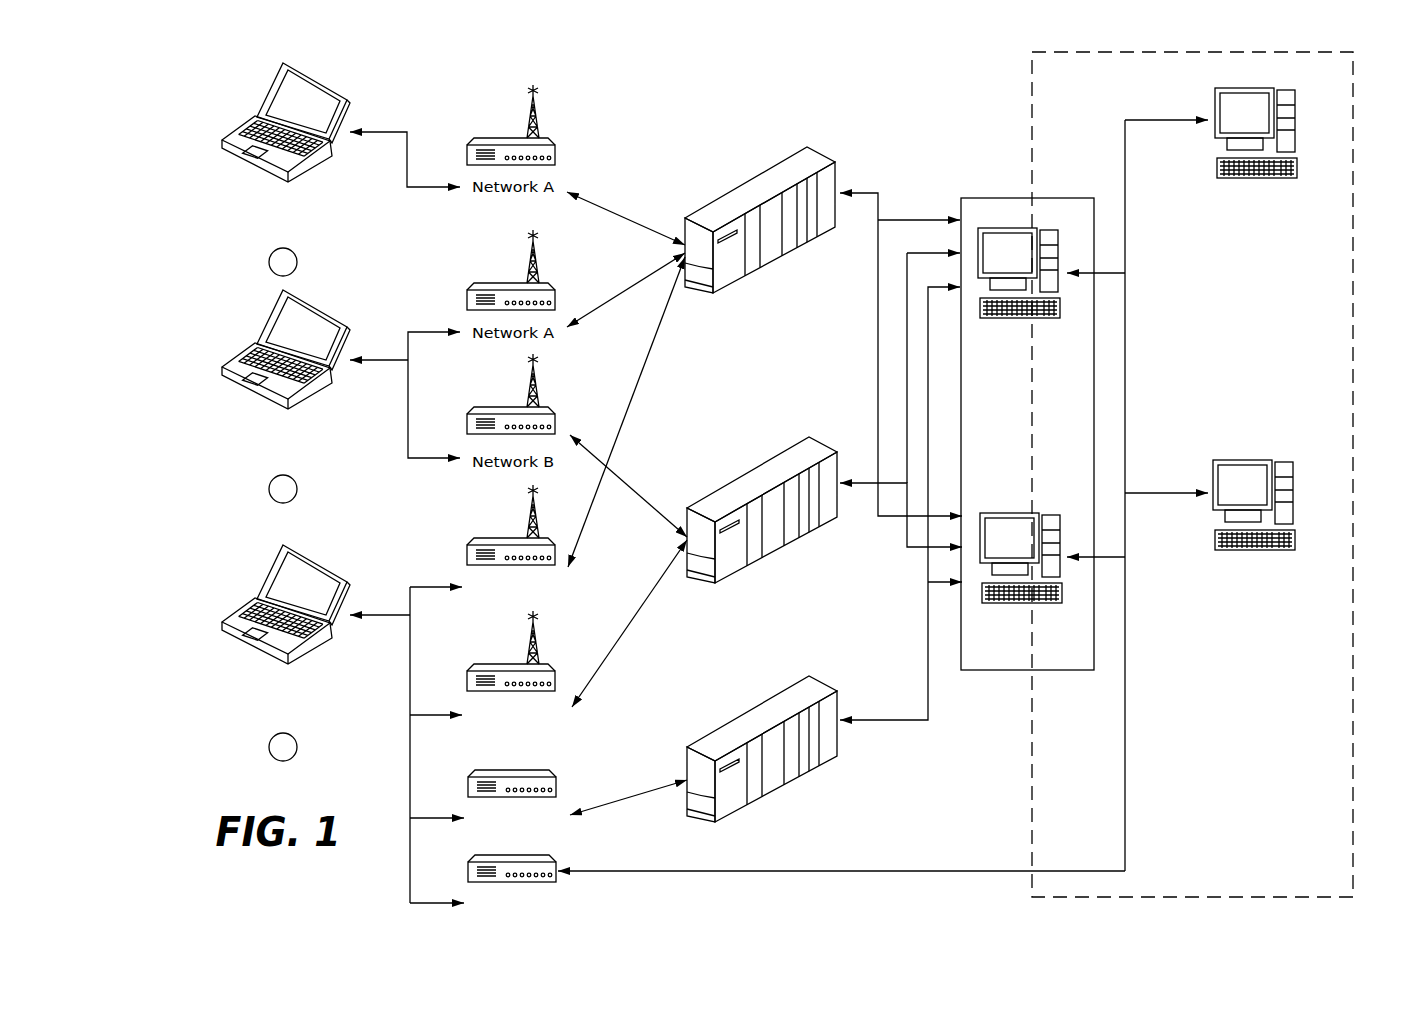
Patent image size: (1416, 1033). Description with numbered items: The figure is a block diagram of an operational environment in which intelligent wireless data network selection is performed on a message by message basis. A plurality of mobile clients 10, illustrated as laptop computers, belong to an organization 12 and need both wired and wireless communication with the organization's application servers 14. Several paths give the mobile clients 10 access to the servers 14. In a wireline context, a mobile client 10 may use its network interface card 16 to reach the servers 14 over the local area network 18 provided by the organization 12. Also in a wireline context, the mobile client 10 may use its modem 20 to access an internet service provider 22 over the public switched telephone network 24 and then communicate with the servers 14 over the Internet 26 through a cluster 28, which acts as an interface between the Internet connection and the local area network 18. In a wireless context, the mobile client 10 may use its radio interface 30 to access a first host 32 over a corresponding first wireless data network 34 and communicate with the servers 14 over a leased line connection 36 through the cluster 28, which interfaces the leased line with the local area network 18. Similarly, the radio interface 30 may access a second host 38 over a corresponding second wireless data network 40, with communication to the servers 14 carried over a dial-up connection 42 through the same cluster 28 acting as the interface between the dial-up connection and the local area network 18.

The mobile clients 10 is at (208, 137).
The organization 12 is at (1353, 830).
The application server 14 is at (1297, 112).
The network interface card (NIC) 16 is at (473, 858).
The local area network (LAN) 18 is at (1126, 790).
The modem 20 is at (473, 773).
The internet service provider (ISP) 22 is at (732, 718).
The public switched telephone network 24 is at (615, 800).
The Internet 26 is at (920, 723).
The cluster 28 is at (1063, 672).
The radio interface 30 is at (472, 540).
The first host 32 is at (740, 183).
The first wireless data network 34 is at (607, 207).
The leased line connection 36 is at (880, 198).
The second host 38 is at (732, 480).
The second wireless data network 40 is at (652, 512).
The dial-up connection 42 is at (907, 537).